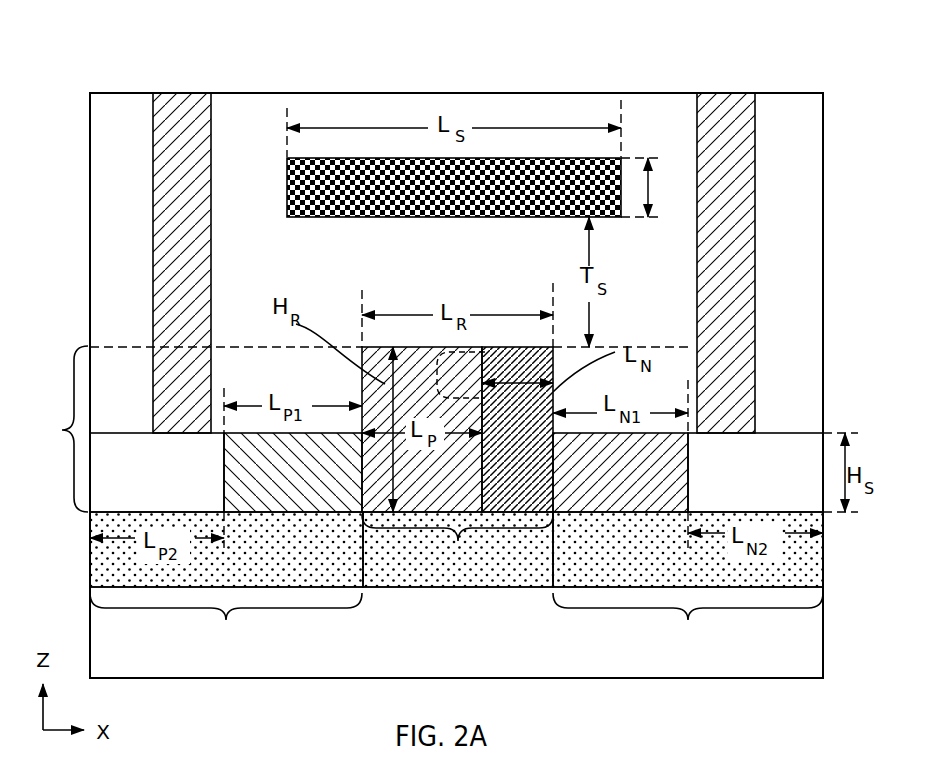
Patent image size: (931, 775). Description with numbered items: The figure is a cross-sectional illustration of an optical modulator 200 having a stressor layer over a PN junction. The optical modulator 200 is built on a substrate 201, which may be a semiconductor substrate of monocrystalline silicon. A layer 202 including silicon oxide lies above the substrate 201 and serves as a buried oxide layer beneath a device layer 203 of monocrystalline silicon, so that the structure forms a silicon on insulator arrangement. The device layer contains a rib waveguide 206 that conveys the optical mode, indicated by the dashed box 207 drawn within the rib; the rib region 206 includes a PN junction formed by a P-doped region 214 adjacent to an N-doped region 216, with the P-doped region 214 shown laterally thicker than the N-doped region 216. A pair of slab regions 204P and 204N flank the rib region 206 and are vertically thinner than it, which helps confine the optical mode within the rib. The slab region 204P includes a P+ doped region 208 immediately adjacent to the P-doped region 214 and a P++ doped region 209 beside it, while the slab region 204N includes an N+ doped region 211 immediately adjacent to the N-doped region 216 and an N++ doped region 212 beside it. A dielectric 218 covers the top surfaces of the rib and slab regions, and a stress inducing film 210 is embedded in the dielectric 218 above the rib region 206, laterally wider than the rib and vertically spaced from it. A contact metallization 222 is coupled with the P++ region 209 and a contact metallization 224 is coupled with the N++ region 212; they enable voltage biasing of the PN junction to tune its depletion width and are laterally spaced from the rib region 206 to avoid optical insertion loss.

The optical modulator 200 is at (120, 76).
The substrate 201 is at (438, 651).
The layer (buried oxide layer) 202 is at (290, 563).
The device layer 203 is at (55, 429).
The slab region 204P is at (226, 628).
The slab region 204N is at (688, 628).
The rib waveguide (rib region) 206 is at (440, 579).
The junction region 207 is at (437, 368).
The P+ doped region 208 is at (281, 484).
The P++ doped region 209 is at (138, 484).
The stressor layer (stress inducing film) 210 is at (440, 199).
The N+ doped region 211 is at (603, 484).
The N++ doped region 212 is at (738, 484).
The P-doped region 214 is at (413, 484).
The N-doped region 216 is at (501, 484).
The dielectric 218 is at (236, 251).
The contact metallization 222 is at (182, 272).
The contact metallization 224 is at (727, 235).